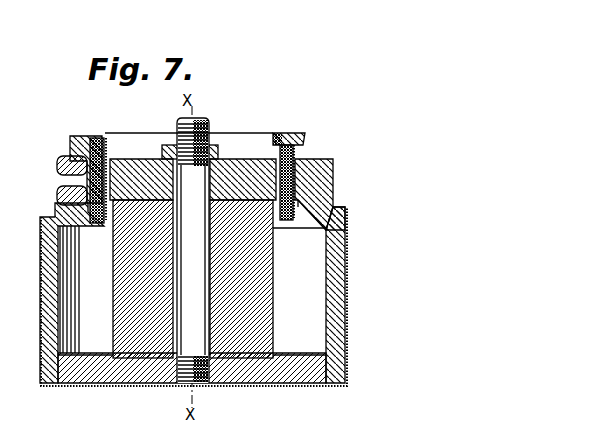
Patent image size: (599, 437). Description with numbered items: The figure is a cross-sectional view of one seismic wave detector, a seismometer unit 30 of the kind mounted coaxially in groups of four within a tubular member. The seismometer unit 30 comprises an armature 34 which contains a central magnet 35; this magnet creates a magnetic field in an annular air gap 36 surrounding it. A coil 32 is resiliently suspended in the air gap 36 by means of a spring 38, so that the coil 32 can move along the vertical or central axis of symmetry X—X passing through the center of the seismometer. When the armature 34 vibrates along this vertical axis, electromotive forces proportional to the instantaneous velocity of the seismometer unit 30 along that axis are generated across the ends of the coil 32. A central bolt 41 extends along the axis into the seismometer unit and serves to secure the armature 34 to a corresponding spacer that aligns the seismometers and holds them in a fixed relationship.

The seismometer unit 30 is at (302, 287).
The coil 32 is at (271, 142).
The armature 34 is at (318, 196).
The central magnet 35 is at (262, 276).
The annular air gap 36 is at (292, 158).
The spring 38 is at (70, 178).
The central bolt 41 is at (196, 345).